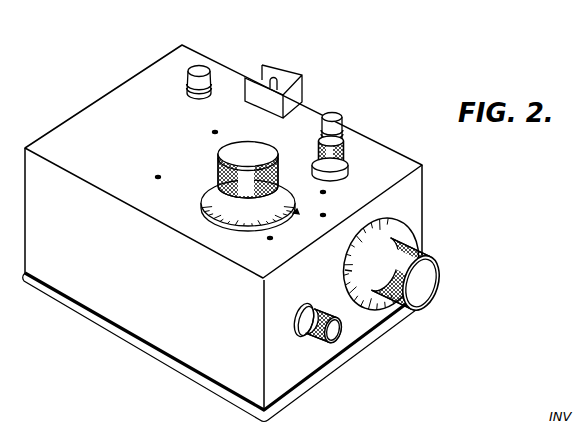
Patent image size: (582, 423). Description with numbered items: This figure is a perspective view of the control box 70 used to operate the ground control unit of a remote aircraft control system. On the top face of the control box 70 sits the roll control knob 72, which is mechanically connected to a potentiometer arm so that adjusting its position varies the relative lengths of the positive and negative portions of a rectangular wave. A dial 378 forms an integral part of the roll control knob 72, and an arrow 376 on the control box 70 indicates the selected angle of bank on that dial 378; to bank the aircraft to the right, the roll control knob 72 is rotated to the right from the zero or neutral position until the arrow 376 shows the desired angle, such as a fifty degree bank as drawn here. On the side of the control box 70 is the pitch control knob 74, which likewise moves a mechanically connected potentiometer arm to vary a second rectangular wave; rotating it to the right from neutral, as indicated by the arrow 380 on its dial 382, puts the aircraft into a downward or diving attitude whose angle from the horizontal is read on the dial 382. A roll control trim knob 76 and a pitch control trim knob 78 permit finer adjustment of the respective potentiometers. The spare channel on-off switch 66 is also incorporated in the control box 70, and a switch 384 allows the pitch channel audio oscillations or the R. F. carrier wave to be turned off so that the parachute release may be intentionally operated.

The control box 70 is at (78, 108).
The switch 384 is at (201, 70).
The on-off switch 66 is at (336, 116).
The roll control trim knob 76 is at (341, 143).
The roll control knob 72 is at (232, 154).
The dial 378 is at (203, 208).
The arrow 376 is at (297, 212).
The arrow 380 is at (384, 220).
The dial 382 is at (346, 272).
The pitch control knob 74 is at (430, 282).
The pitch control trim knob 78 is at (335, 333).